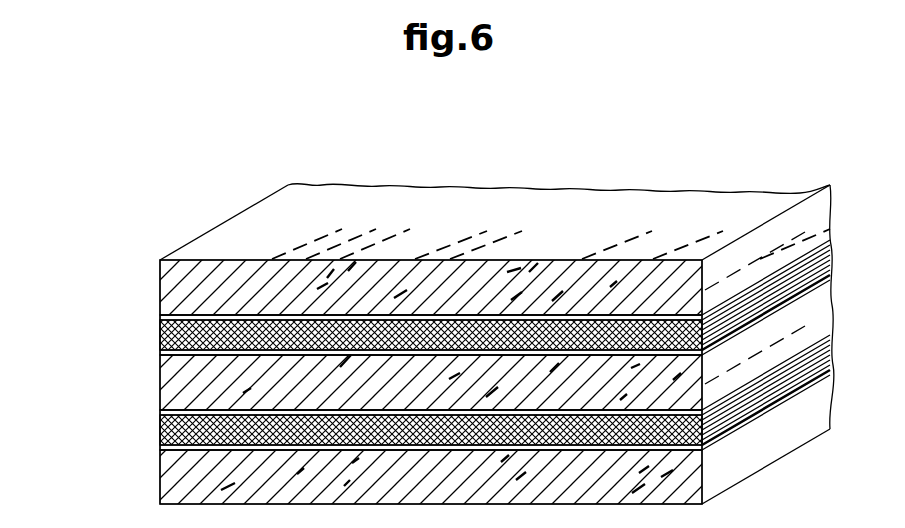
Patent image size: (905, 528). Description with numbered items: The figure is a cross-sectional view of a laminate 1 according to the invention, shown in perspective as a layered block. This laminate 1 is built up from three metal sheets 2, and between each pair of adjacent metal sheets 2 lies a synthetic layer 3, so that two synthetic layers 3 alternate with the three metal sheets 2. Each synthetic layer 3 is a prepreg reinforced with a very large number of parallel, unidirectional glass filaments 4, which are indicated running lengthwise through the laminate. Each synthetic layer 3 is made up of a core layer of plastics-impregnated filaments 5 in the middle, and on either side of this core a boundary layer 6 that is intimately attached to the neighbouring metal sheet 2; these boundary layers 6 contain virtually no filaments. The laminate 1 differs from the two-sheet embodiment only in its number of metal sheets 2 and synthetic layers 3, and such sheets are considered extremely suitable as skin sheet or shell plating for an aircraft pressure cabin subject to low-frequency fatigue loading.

The laminate 1 is at (156, 256).
The metal sheet 2 is at (166, 290).
The synthetic layer 3 is at (160, 315).
The glass filaments 4 is at (447, 242).
The core layer of plastics-impregnated filaments 5 is at (160, 322).
The boundary layer 6 is at (832, 242).